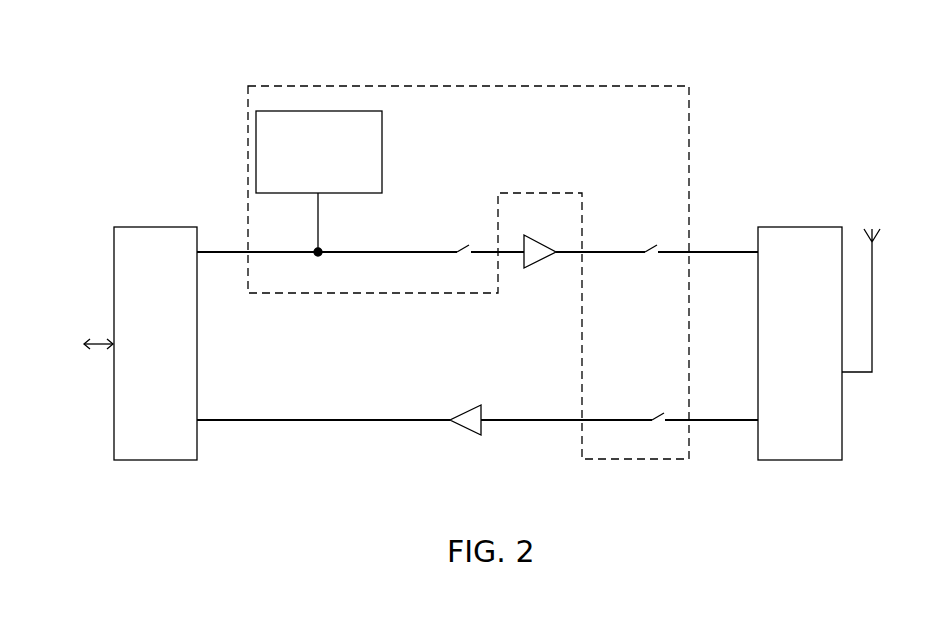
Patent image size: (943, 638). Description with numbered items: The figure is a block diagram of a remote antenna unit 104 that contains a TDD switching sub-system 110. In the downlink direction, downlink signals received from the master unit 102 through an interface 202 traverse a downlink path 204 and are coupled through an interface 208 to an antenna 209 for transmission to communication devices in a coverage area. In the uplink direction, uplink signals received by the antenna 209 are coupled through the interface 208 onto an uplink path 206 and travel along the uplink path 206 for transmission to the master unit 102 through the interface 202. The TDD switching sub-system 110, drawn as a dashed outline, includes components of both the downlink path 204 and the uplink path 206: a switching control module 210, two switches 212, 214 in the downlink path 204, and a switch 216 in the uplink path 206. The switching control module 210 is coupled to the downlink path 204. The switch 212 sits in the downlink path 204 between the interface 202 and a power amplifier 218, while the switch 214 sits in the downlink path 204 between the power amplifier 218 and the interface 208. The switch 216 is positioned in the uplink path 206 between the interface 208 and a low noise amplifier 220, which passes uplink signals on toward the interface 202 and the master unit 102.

The remote antenna unit 104 is at (96, 25).
The master unit 102 is at (67, 344).
The TDD switching sub-system 110 is at (243, 75).
The interface 202 is at (142, 365).
The downlink path 204 is at (225, 263).
The uplink path 206 is at (271, 428).
The interface 208 is at (787, 365).
The antenna 209 is at (864, 213).
The switching control module 210 is at (364, 185).
The switch 212 is at (463, 267).
The switch 214 is at (650, 267).
The switch 216 is at (665, 432).
The power amplifier 218 is at (536, 280).
The low noise amplifier 220 is at (487, 440).